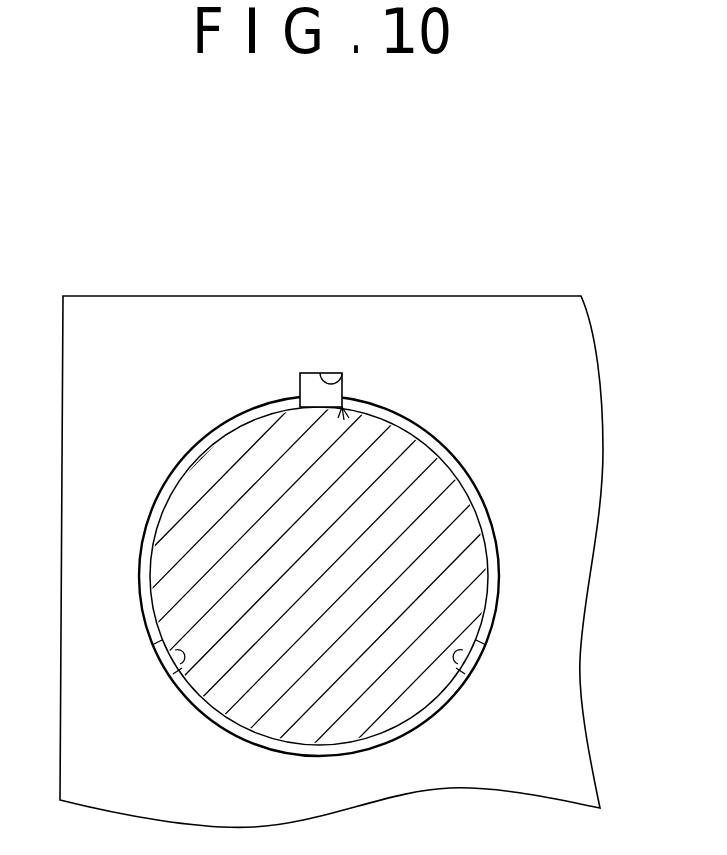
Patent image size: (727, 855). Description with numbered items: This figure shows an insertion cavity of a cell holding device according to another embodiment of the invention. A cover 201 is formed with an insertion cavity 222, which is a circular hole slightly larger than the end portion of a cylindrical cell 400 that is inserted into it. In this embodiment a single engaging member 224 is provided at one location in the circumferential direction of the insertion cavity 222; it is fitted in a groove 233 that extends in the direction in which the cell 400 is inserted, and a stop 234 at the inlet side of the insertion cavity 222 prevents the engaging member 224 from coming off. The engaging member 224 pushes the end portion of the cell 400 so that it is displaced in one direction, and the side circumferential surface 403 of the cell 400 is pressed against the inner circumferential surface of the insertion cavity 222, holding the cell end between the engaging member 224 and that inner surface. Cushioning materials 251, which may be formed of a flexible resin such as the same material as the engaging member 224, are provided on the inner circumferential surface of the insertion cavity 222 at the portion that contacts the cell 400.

The cover 201 is at (133, 296).
The insertion cavity 222 is at (150, 510).
The engaging member 224 is at (302, 387).
The stop 234 is at (342, 383).
The groove 233 is at (343, 408).
The cylindrical cell 400 is at (555, 468).
The side circumferential surface 403 is at (225, 723).
The cushioning material 251 is at (167, 670).